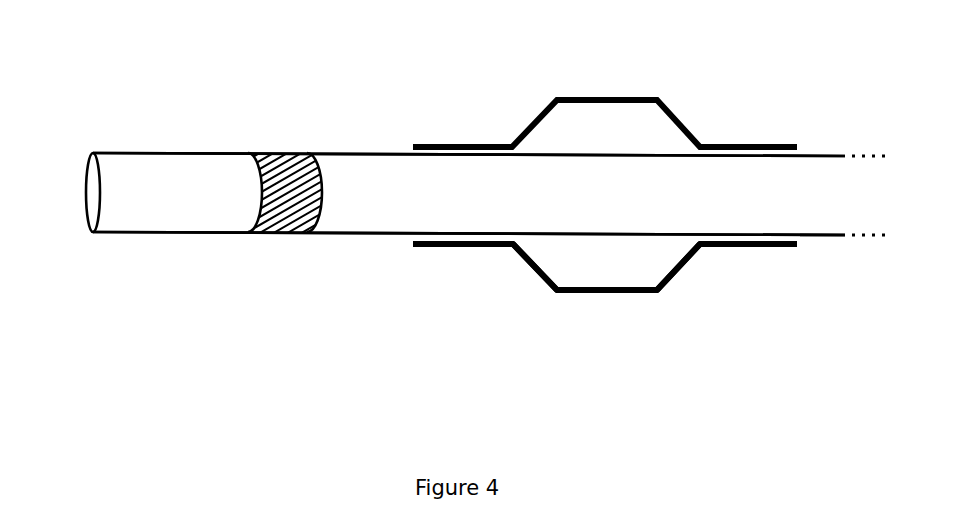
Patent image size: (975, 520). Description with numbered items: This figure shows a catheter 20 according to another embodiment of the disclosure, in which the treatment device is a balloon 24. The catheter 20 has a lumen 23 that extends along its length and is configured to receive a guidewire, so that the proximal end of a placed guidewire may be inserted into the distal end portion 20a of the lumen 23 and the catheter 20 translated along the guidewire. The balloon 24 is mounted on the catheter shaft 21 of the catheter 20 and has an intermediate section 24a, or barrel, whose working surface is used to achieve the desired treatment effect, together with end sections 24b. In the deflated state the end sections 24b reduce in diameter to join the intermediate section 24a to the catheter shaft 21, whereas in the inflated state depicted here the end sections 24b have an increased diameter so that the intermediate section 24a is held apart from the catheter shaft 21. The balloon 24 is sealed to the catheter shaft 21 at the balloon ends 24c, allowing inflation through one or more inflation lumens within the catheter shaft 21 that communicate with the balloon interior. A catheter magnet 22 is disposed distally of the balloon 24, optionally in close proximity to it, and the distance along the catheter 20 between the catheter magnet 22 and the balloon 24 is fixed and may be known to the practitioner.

The catheter 20 is at (162, 90).
The distal end portion 20a is at (834, 250).
The catheter shaft 21 is at (354, 142).
The catheter magnet 22 is at (279, 236).
The lumen 23 is at (97, 193).
The balloon 24 is at (604, 98).
The intermediate section 24a is at (607, 295).
The end sections 24b is at (530, 268).
The balloon ends 24c is at (460, 248).